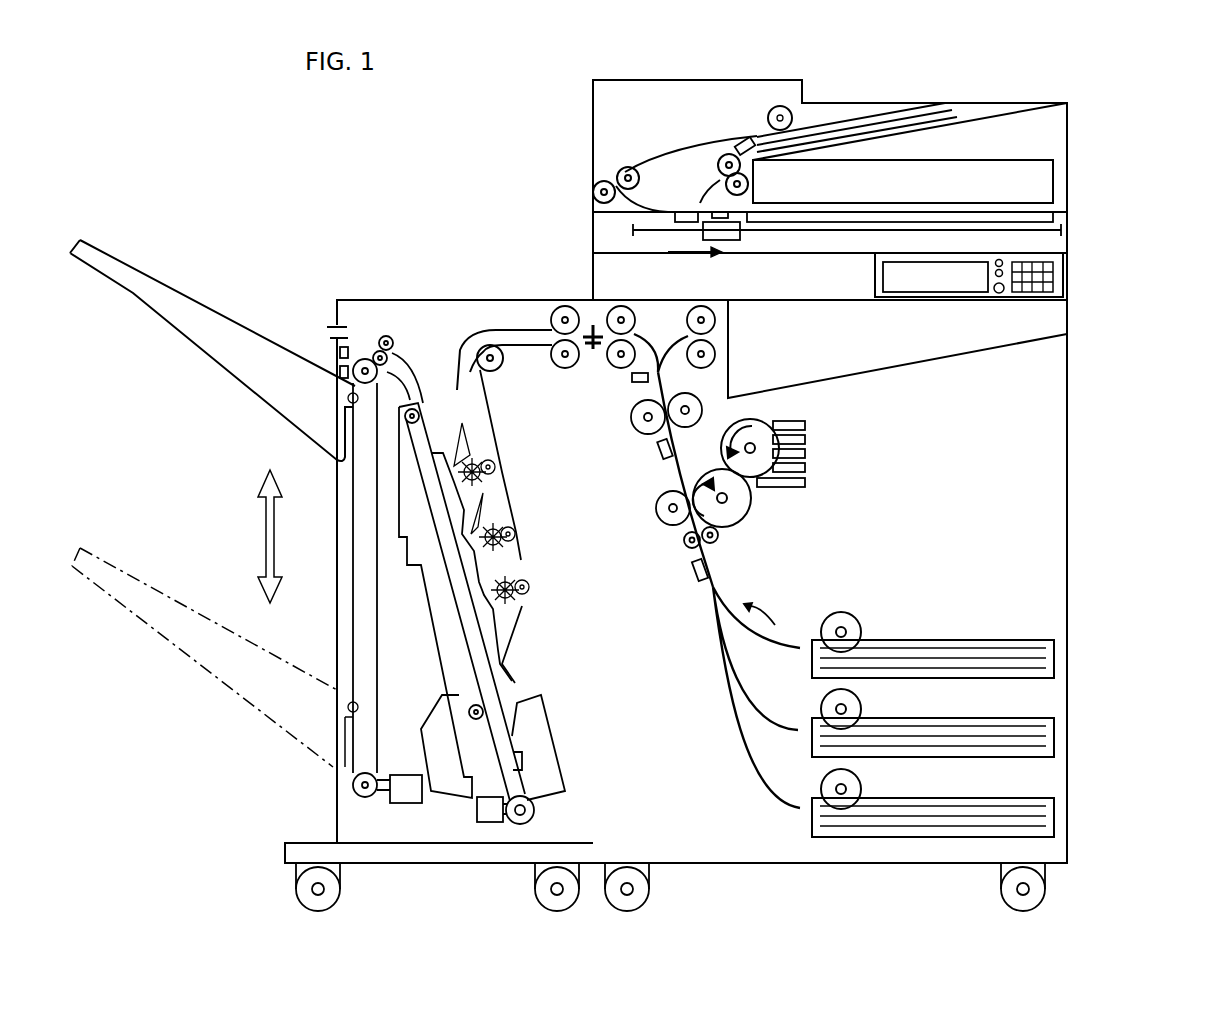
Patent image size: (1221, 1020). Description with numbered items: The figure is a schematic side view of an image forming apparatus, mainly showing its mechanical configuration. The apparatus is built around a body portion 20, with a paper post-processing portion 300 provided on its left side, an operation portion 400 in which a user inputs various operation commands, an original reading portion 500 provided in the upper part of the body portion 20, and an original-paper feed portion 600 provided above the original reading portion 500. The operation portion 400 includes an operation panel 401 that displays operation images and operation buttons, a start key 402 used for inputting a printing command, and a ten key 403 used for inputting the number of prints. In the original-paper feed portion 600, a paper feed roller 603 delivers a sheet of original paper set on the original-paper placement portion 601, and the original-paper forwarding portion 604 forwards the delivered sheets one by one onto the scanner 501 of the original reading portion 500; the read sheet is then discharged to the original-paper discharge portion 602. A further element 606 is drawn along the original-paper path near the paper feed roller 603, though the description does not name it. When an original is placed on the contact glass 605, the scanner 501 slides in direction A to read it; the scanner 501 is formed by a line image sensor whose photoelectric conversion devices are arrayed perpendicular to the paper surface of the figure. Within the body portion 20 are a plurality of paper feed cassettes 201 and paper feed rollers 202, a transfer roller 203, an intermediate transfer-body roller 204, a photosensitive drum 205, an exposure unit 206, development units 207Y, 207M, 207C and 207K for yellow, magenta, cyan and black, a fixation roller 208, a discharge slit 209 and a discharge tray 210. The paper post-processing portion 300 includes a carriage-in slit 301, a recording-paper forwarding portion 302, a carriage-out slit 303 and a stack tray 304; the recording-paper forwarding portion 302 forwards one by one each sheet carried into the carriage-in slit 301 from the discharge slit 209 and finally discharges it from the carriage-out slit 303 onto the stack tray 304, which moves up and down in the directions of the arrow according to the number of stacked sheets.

The body portion 20 is at (1046, 461).
The paper feed cassettes 201 is at (1056, 666).
The paper feed rollers 202 is at (860, 632).
The transfer roller 203 is at (665, 517).
The intermediate transfer-body roller 204 is at (732, 517).
The photosensitive drum 205 is at (760, 465).
The exposure unit 206 is at (806, 483).
The development unit for black 207K is at (806, 426).
The development unit for cyan 207C is at (806, 440).
The development unit for magenta 207M is at (806, 454).
The development unit for yellow 207Y is at (806, 468).
The fixation roller 208 is at (648, 430).
The discharge slit 209 is at (608, 333).
The discharge tray 210 is at (980, 352).
The paper post-processing portion 300 is at (360, 290).
The carriage-in slit 301 is at (582, 332).
The recording-paper forwarding portion 302 is at (477, 330).
The carriage-out slit 303 is at (326, 328).
The stack tray 304 is at (254, 412).
The operation portion 400 is at (1078, 277).
The operation panel 401 is at (882, 272).
The start key 402 is at (999, 293).
The ten key 403 is at (1018, 292).
The original reading portion 500 is at (1078, 216).
The scanner 501 is at (727, 240).
The original-paper feed portion 600 is at (884, 94).
The original-paper placement portion 601 is at (982, 112).
The original-paper discharge portion 602 is at (925, 200).
The paper feed roller 603 is at (793, 116).
The original-paper forwarding portion 604 is at (658, 153).
The contact glass 605 is at (1037, 205).
The document sensor 606 is at (743, 137).